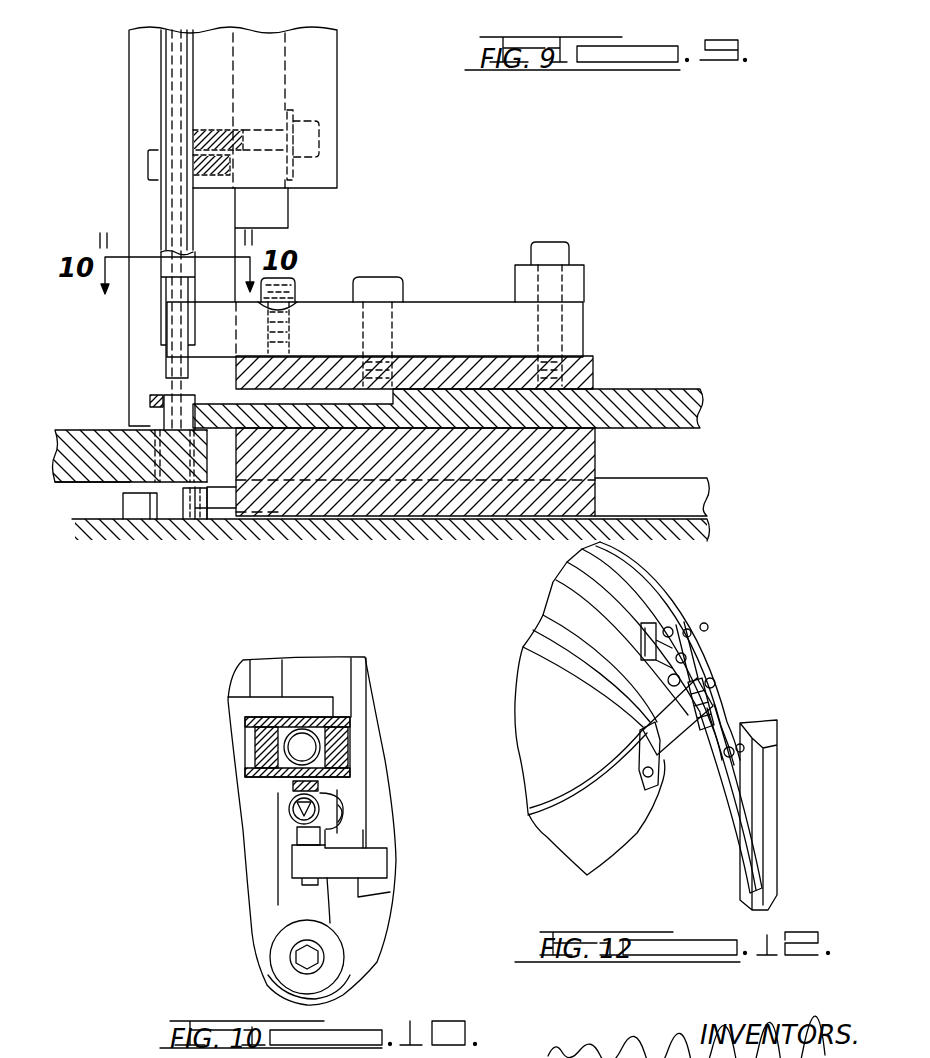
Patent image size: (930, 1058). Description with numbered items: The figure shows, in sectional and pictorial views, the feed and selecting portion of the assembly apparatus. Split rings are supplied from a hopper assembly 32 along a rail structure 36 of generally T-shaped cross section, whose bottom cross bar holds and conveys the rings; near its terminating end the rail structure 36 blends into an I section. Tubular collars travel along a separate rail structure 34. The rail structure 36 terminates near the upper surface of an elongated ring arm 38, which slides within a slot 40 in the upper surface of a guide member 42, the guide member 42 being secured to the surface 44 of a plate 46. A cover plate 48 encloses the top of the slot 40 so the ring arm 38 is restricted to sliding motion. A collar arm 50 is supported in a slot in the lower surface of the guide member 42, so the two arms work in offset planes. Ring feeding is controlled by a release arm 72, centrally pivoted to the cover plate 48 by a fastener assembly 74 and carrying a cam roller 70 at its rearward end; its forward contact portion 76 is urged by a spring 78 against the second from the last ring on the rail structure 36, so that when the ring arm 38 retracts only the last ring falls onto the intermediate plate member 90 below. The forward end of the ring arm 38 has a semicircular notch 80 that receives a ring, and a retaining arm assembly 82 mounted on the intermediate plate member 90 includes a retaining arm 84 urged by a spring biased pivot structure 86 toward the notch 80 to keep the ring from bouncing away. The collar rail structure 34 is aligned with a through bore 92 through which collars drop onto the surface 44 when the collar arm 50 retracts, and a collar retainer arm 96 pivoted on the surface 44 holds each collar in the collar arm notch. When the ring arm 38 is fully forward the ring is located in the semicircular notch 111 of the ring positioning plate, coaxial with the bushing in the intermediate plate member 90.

In FIG. 12, the hopper assembly 32 is at (688, 579).
In FIG. 9, the rail structure 34 is at (136, 80).
In FIG. 10, the rail structure 34 is at (345, 742).
In FIG. 9, the rail structure 36 is at (185, 27).
In FIG. 10, the rail structure 36 is at (290, 787).
In FIG. 12, the rail structure 36 is at (723, 737).
In FIG. 9, the ring arm 38 is at (636, 397).
In FIG. 10, the ring arm 38 is at (352, 800).
In FIG. 9, the slot 40 is at (572, 418).
In FIG. 9, the guide member 42 is at (597, 470).
In FIG. 9, the surface 44 is at (75, 522).
In FIG. 9, the plate 46 is at (110, 530).
In FIG. 9, the cover plate 48 is at (598, 355).
In FIG. 9, the collar arm 50 is at (228, 505).
In FIG. 10, the collar arm 50 is at (352, 660).
In FIG. 9, the cam roller 70 is at (568, 248).
In FIG. 9, the release arm 72 is at (437, 300).
In FIG. 10, the release arm 72 is at (390, 892).
In FIG. 9, the fastener assembly 74 is at (385, 280).
In FIG. 10, the contact portion 76 is at (305, 832).
In FIG. 9, the spring 78 is at (310, 300).
In FIG. 10, the notch 80 is at (335, 813).
In FIG. 10, the retaining arm assembly 82 is at (272, 904).
In FIG. 10, the retaining arm 84 is at (280, 857).
In FIG. 10, the spring biased pivot structure 86 is at (320, 960).
In FIG. 9, the intermediate plate member 90 is at (82, 428).
In FIG. 9, the through bore 92 is at (112, 488).
In FIG. 9, the collar retainer arm 96 is at (140, 512).
In FIG. 10, the collar retainer arm 96 is at (260, 673).
In FIG. 9, the semicircular notch 111 is at (185, 505).